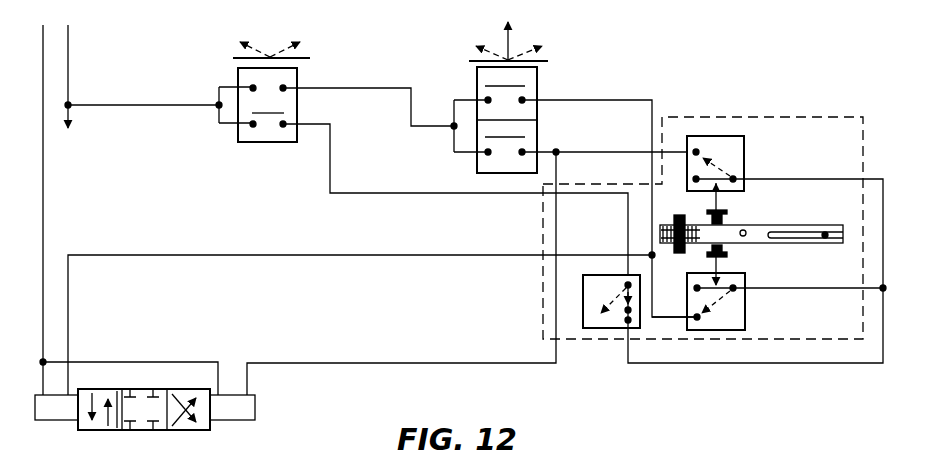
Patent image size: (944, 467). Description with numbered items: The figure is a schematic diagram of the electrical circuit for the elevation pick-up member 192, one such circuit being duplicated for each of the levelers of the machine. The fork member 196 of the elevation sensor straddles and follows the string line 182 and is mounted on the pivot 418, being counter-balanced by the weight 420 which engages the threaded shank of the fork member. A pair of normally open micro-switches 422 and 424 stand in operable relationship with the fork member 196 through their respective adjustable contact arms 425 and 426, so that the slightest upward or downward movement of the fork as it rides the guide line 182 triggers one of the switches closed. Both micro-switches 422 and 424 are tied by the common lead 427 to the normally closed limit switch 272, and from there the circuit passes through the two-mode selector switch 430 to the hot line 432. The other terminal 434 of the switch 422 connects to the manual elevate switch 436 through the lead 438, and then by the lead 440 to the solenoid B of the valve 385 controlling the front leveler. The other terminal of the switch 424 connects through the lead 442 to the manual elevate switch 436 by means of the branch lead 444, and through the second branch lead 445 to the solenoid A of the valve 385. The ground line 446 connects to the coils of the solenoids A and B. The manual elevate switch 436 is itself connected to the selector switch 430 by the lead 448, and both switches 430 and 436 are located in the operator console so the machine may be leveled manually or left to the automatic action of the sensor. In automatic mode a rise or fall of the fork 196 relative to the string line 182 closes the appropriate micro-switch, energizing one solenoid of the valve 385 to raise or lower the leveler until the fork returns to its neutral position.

The hot line 432 is at (68, 67).
The ground line 446 is at (43, 232).
The 2-mode selector switch 430 is at (262, 142).
The adjustable contact arm 426 is at (328, 185).
The lead 448 is at (355, 88).
The manual elevate switch 436 is at (537, 80).
The lead 438 is at (556, 150).
The terminal 434 is at (586, 154).
The second branch lead 445 is at (370, 257).
The branch lead 444 is at (652, 104).
The weight 420 is at (675, 262).
The elevation sensor 192 is at (803, 161).
The micro-switch 422 is at (744, 150).
The common lead 427 is at (747, 363).
The pivot 418 is at (746, 232).
The string line 182 is at (825, 232).
The fork member 196 is at (793, 243).
The adjustable contact arm 425 is at (729, 254).
The micro-switch 424 is at (745, 310).
The lead 442 is at (670, 318).
The limit switch 272 is at (630, 330).
The lead 440 is at (400, 363).
The double solenoid valve 385 is at (140, 430).